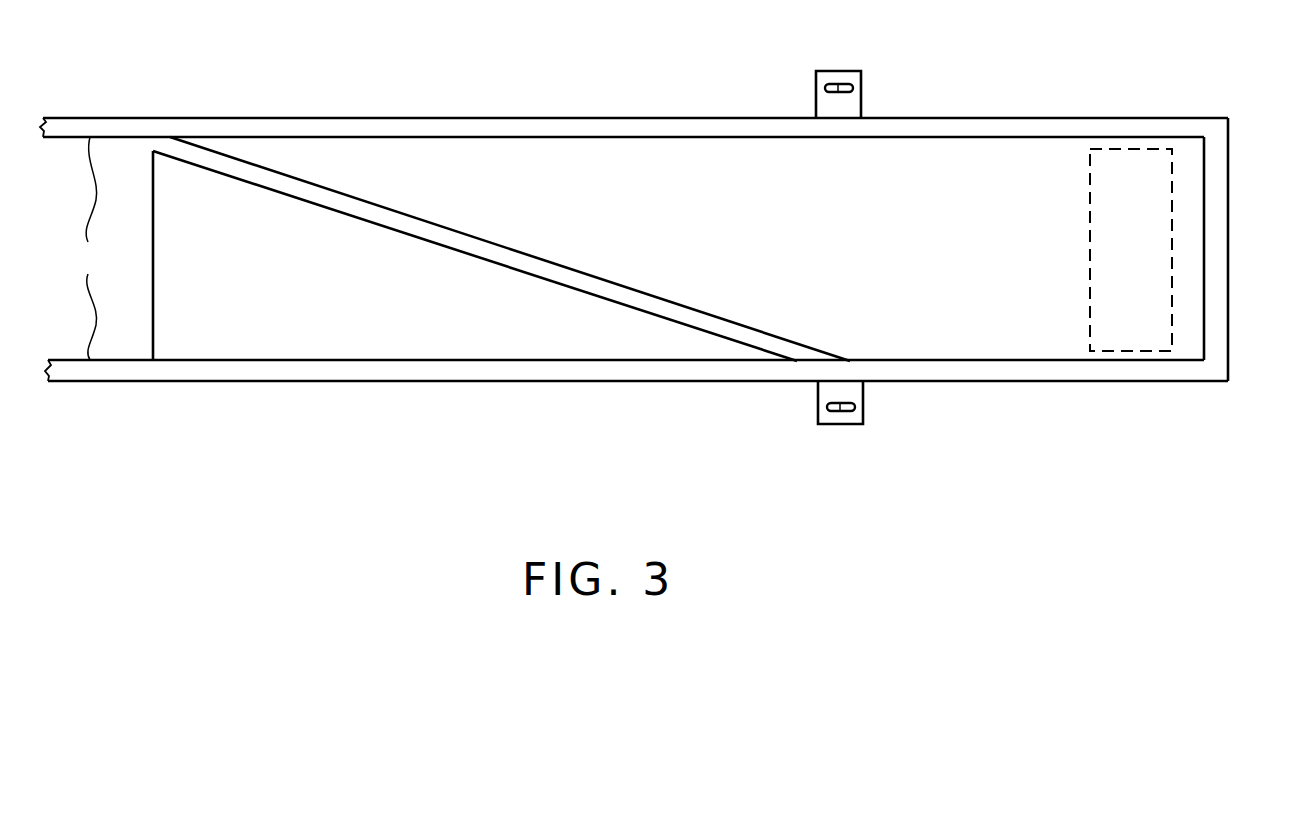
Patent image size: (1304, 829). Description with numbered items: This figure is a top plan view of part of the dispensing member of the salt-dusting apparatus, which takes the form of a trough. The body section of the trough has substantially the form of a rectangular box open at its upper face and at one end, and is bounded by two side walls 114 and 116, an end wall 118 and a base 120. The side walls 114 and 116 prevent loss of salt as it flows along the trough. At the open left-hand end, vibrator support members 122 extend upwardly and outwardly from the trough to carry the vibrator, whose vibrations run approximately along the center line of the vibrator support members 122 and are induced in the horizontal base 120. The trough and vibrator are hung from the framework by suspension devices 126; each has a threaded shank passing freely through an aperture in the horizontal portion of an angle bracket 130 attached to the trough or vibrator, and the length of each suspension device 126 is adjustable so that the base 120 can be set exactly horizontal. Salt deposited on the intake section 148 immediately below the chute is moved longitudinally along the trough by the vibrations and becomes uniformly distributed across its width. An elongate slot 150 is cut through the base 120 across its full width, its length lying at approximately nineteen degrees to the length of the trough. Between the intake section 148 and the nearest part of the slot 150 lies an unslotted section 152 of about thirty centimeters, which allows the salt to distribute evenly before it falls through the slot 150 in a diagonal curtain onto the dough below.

The side wall 114 is at (512, 128).
The side wall 116 is at (491, 371).
The end wall 118 is at (1220, 247).
The base 120 is at (898, 249).
The vibrator support members 122 is at (80, 248).
The suspension device 126 is at (849, 75).
The angle bracket 130 is at (857, 103).
The intake section 148 is at (1128, 326).
The elongate slot 150 is at (545, 265).
The unslotted section 152 is at (1033, 345).